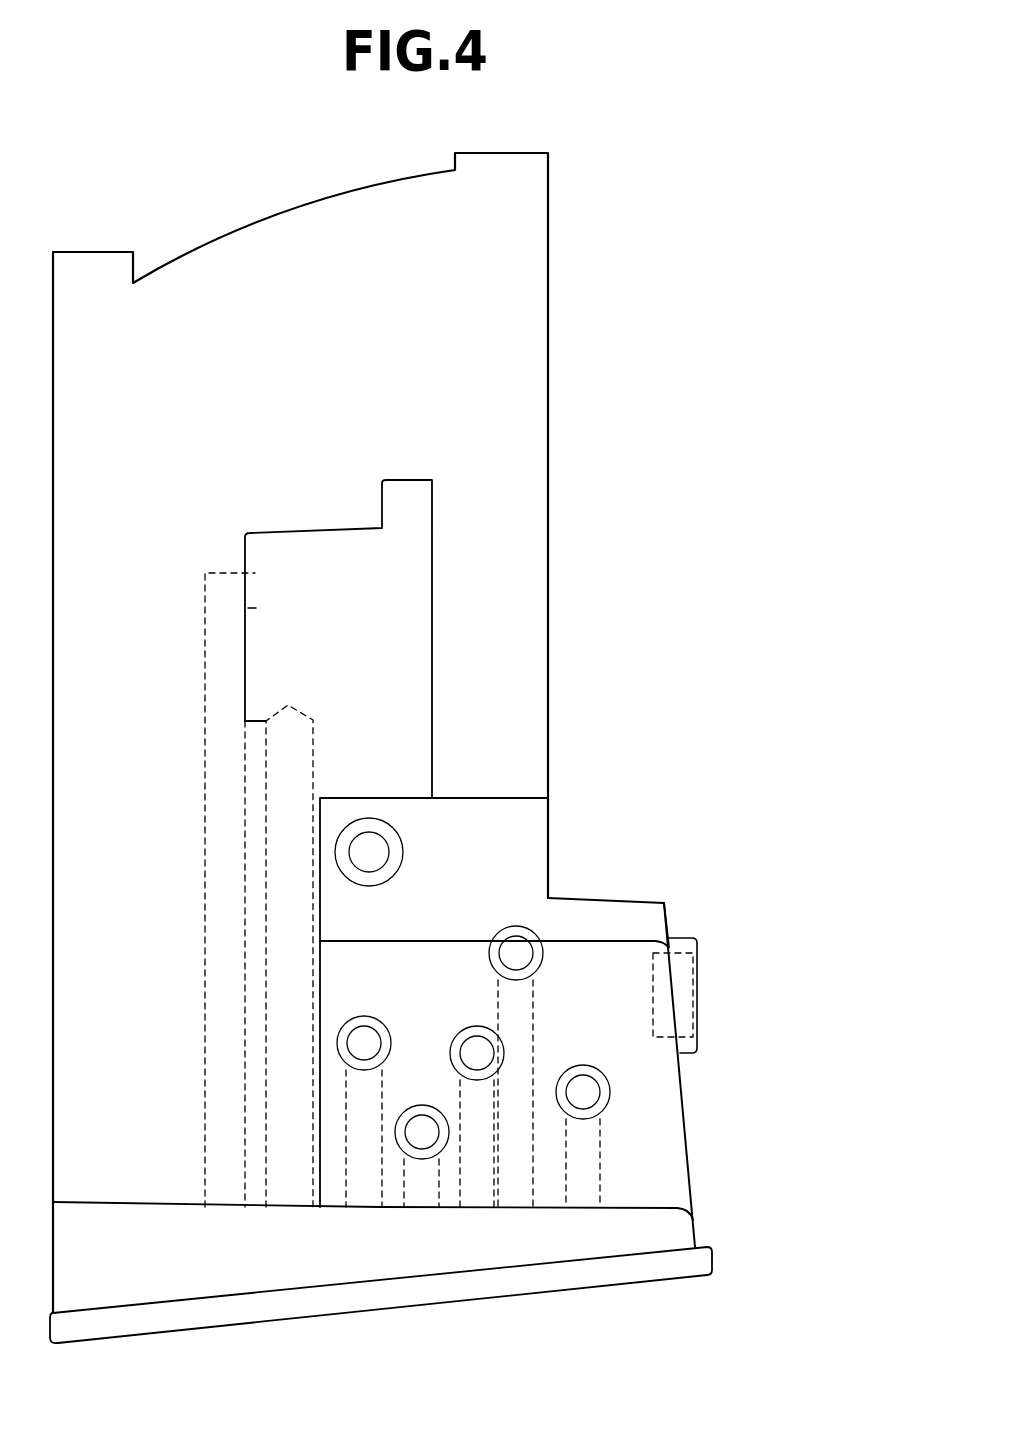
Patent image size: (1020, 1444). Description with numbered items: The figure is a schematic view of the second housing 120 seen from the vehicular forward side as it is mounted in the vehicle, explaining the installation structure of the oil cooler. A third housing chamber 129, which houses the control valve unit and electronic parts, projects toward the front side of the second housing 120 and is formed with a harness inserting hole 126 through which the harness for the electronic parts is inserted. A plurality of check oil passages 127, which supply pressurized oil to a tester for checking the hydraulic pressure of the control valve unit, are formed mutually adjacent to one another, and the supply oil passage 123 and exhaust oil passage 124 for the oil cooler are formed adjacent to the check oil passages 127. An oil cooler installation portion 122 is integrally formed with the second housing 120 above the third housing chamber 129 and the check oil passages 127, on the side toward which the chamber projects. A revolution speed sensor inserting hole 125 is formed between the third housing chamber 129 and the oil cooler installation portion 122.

The second housing 120 is at (566, 294).
The oil cooler installation portion 122 is at (433, 516).
The supply oil passage 123 is at (267, 867).
The exhaust oil passage 124 is at (205, 796).
The revolution speed sensor inserting hole 125 is at (385, 843).
The harness inserting hole 126 is at (695, 961).
The check oil passages 127 is at (503, 942).
The third housing chamber 129 is at (603, 915).